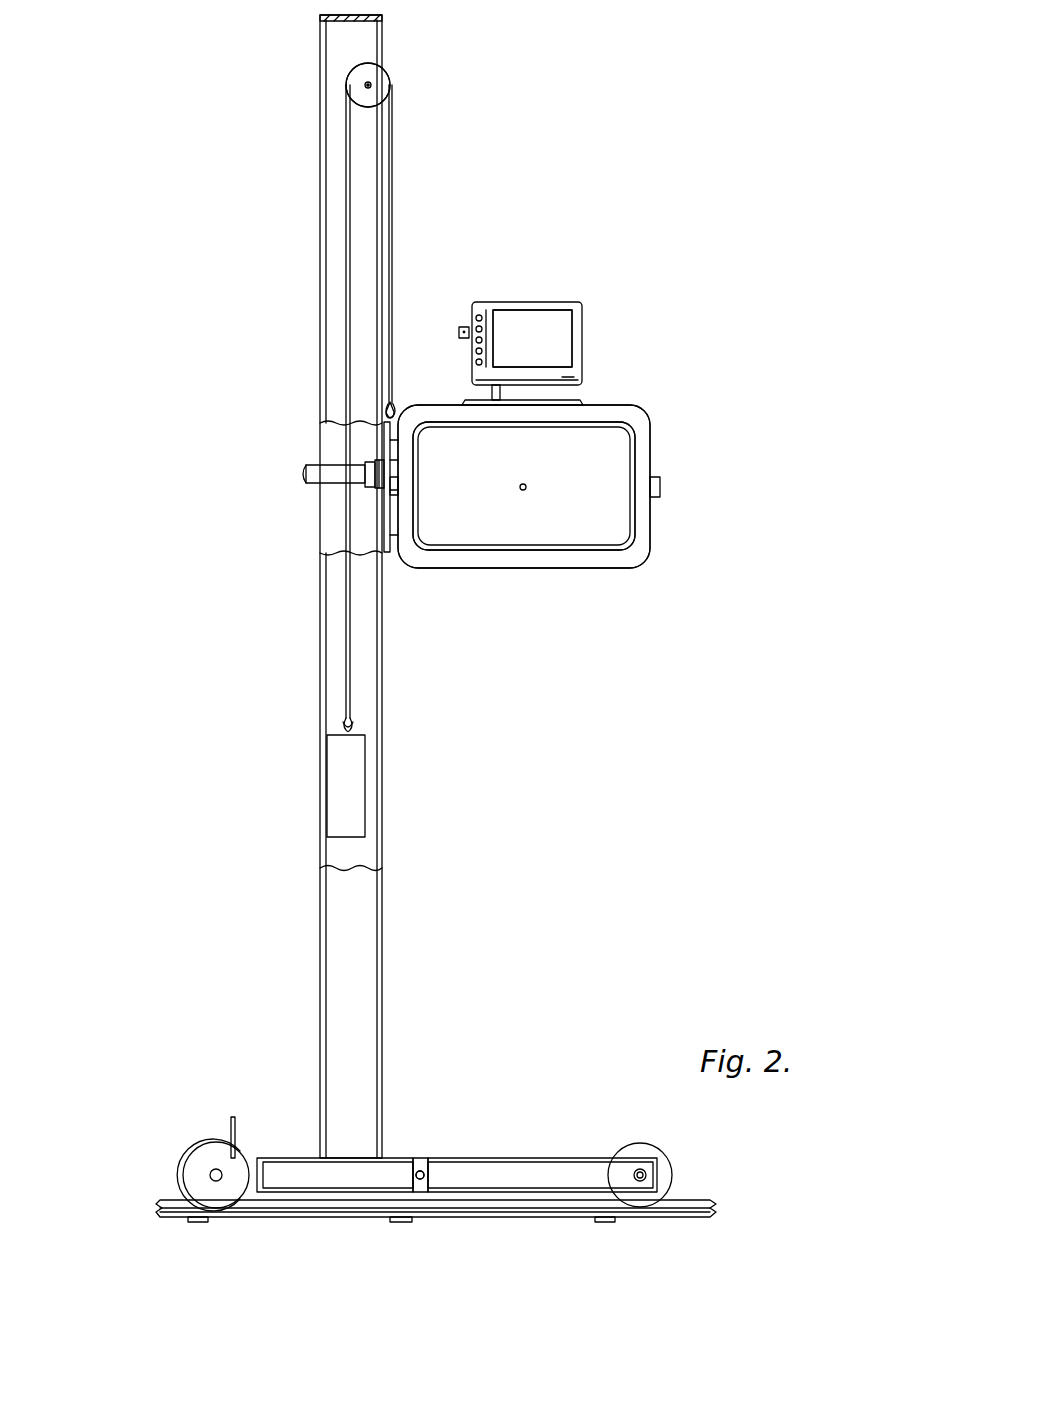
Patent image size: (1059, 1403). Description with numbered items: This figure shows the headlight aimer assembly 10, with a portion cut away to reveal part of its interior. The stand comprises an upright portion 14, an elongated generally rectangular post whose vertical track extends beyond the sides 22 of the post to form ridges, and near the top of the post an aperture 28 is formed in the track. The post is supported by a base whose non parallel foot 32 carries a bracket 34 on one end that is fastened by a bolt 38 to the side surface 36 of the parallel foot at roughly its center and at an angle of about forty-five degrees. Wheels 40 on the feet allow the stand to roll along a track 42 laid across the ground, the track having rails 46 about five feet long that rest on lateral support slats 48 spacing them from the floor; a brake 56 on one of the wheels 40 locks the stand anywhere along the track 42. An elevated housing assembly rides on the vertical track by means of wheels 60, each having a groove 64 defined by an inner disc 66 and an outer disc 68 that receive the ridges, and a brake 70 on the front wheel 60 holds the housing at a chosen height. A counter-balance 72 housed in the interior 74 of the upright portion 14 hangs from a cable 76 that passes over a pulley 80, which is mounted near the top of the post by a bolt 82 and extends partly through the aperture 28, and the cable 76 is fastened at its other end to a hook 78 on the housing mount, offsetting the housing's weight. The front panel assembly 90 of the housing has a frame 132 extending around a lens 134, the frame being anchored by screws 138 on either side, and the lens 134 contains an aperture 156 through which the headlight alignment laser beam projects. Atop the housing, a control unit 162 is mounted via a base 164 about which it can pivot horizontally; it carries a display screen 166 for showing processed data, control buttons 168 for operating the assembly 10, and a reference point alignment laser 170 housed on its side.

The headlight aimer assembly 10 is at (673, 270).
The upright portion 14 is at (386, 1045).
The sides of the upright portion 22 is at (355, 972).
The aperture 28 is at (382, 70).
The non parallel foot 32 is at (390, 1168).
The bracket 34 is at (421, 1168).
The side surface 36 is at (598, 1166).
The bolt 38 is at (422, 1180).
The wheels 40 is at (208, 1143).
The track 42 is at (506, 1212).
The rails 46 is at (686, 1210).
The lateral support slats 48 is at (198, 1224).
The brake 56 is at (233, 1120).
The wheels 60 is at (366, 456).
The groove 64 is at (388, 545).
The inner disc 66 is at (400, 472).
The outer disc 68 is at (378, 490).
The brake 70 is at (304, 473).
The counter-balance 72 is at (353, 785).
The interior 74 is at (336, 35).
The cable 76 is at (392, 202).
The hook 78 is at (394, 408).
The pulley 80 is at (381, 88).
The bolt 82 is at (365, 86).
The front panel assembly 90 is at (653, 462).
The frame 132 is at (645, 428).
The lens 134 is at (612, 522).
The screw 138 is at (403, 485).
The aperture 156 is at (525, 492).
The control unit 162 is at (540, 298).
The base 164 is at (578, 404).
The display screen 166 is at (558, 341).
The control buttons 168 is at (477, 327).
The reference point alignment laser 170 is at (463, 340).